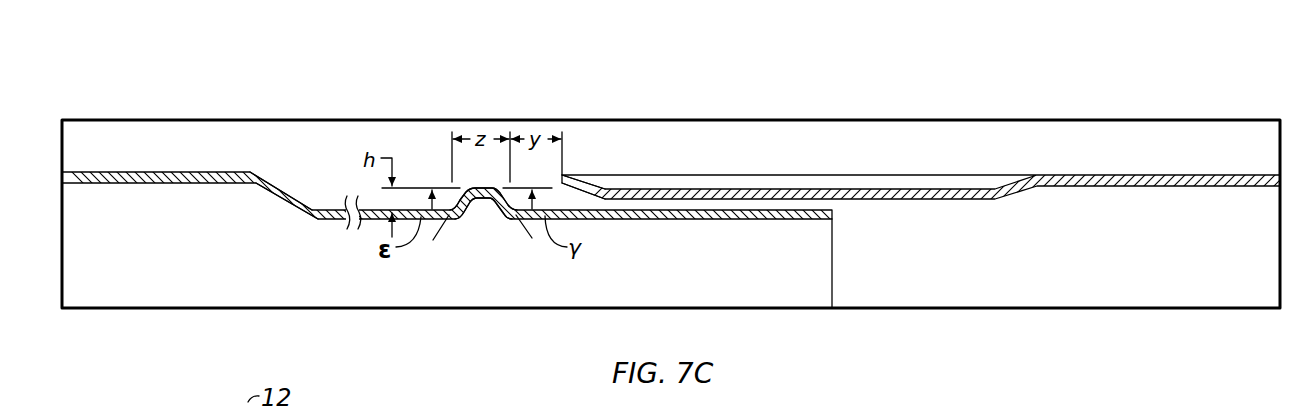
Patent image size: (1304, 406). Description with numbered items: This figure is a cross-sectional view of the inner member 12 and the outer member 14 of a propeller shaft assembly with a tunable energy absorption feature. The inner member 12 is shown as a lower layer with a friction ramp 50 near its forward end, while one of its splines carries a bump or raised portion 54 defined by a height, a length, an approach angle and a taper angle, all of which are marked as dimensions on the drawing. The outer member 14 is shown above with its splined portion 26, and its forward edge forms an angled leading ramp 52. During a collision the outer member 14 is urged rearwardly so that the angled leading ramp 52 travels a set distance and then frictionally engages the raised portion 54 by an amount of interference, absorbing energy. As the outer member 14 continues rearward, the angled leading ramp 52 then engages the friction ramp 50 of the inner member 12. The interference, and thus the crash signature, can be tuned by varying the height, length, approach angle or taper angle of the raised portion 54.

The inner member 12 is at (124, 154).
The outer member 14 is at (1213, 145).
The splined portion 26 is at (900, 169).
The friction ramp 50 is at (274, 184).
The angled leading ramp 52 is at (590, 185).
The raised portion 54 is at (475, 230).